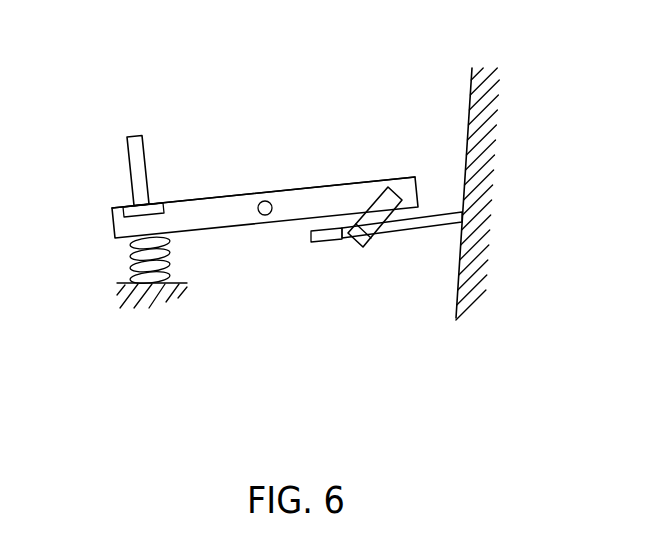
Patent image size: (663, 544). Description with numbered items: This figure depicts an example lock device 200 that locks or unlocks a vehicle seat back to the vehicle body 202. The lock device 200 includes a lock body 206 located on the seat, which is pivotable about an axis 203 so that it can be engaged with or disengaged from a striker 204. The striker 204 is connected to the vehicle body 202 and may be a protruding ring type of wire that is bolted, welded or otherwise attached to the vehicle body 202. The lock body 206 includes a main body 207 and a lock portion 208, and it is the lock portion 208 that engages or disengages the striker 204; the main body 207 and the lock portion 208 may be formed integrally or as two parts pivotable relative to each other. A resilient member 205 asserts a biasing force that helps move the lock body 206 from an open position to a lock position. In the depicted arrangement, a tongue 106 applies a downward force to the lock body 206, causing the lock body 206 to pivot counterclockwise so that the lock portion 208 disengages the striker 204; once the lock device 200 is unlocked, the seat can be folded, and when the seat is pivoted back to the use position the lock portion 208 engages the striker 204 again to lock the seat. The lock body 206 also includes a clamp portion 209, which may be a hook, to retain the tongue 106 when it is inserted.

The lock device 200 is at (330, 95).
The vehicle body 202 is at (481, 163).
The axis 203 is at (261, 216).
The striker 204 is at (417, 224).
The resilient member 205 is at (134, 274).
The lock body 206 is at (219, 196).
The main body 207 is at (324, 197).
The lock portion 208 is at (350, 234).
The clamp portion 209 is at (124, 215).
The tongue 106 is at (140, 157).